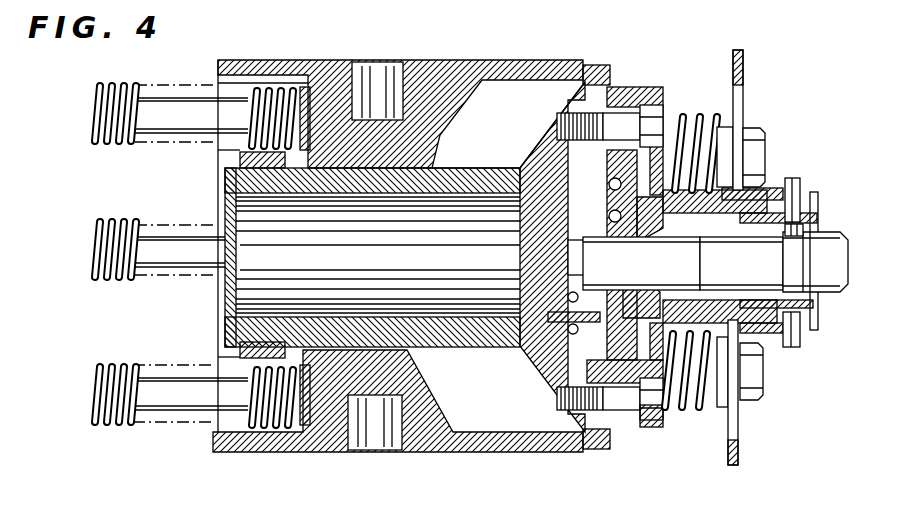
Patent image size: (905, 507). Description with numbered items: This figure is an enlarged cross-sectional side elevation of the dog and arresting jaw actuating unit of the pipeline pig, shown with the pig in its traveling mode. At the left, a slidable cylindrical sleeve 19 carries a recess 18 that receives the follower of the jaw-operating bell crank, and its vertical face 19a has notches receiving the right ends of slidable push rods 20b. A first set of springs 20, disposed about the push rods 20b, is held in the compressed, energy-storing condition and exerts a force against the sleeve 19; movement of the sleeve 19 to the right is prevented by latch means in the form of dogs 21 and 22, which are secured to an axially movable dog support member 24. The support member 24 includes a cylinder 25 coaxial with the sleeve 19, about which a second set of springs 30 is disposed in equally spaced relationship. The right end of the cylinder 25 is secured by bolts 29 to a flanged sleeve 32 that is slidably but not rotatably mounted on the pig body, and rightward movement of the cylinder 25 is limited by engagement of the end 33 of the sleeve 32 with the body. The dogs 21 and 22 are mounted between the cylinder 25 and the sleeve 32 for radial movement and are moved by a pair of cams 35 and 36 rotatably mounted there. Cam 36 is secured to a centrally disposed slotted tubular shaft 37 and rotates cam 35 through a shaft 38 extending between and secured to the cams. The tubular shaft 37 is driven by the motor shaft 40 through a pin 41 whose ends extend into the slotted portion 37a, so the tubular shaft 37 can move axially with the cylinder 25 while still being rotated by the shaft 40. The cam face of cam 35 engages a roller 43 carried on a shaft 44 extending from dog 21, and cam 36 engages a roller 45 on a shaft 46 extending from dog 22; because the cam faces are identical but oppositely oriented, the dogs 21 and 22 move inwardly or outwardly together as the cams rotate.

The recess 18 is at (400, 83).
The slidable cylindrical sleeve 19 is at (510, 433).
The vertical face of sleeve 19a is at (300, 352).
The first set of springs 20 is at (114, 84).
The slidable push rods 20b is at (183, 128).
The dog 21 is at (593, 449).
The dog 22 is at (593, 70).
The axially movable dog support member 24 is at (438, 160).
The cylinder 25 is at (357, 327).
The bolts 29 is at (648, 427).
The second set of springs 30 is at (693, 117).
The flanged sleeve 32 is at (797, 187).
The end of sleeve 33 is at (818, 203).
The cam 35 is at (560, 137).
The cam 36 is at (623, 160).
The slotted tubular shaft 37 is at (762, 224).
The slotted portion of tubular shaft 37a is at (815, 222).
The shaft 38 is at (587, 258).
The motor shaft 40 is at (831, 289).
The pin 41 is at (760, 285).
The roller 43 is at (577, 297).
The shaft 44 is at (573, 317).
The roller 45 is at (652, 255).
The shaft 46 is at (557, 163).